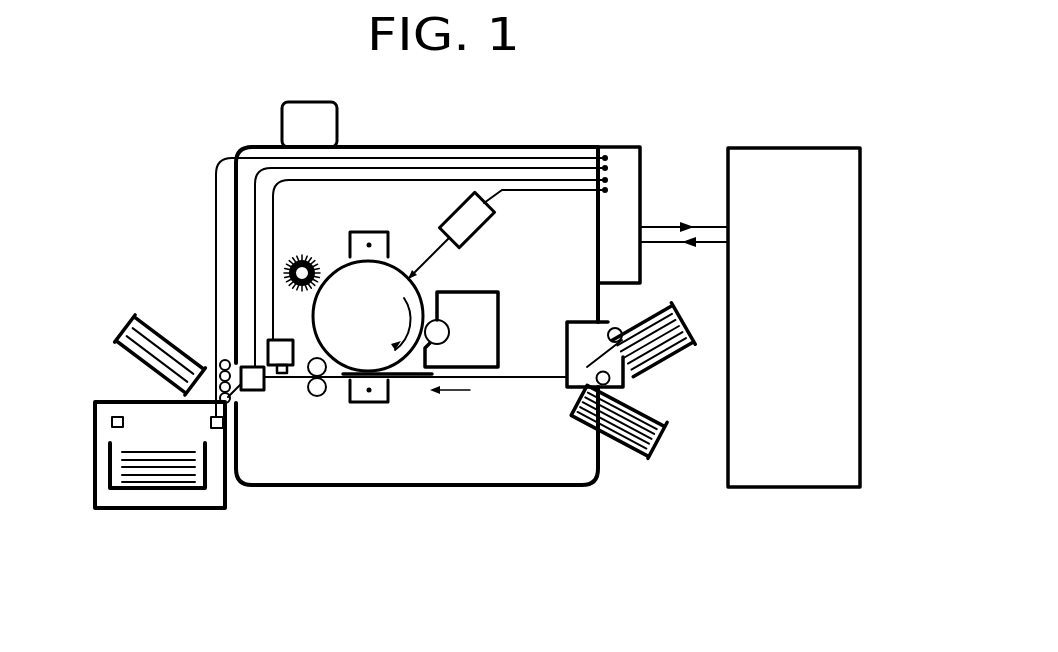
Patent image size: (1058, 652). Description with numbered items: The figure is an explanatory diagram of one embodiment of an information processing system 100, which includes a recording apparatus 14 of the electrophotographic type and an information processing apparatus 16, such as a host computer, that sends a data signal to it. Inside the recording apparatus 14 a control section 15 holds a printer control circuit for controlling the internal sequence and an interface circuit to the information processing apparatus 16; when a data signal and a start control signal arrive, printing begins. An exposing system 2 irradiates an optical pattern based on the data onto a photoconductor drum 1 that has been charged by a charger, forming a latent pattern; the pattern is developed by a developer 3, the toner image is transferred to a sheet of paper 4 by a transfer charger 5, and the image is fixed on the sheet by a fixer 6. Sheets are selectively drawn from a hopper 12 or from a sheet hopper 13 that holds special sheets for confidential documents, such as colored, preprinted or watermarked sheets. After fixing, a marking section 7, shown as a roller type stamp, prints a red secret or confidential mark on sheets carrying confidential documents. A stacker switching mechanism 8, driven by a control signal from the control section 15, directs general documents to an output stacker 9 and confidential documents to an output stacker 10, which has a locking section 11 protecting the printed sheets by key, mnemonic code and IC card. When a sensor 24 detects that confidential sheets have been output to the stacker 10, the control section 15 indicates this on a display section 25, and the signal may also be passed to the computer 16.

The information processing system 100 is at (160, 148).
The photoconductor drum 1 is at (414, 284).
The exposing system 2 is at (478, 227).
The developer 3 is at (498, 320).
The sheet of paper 4 is at (418, 380).
The transfer charger 5 is at (378, 402).
The fixer 6 is at (317, 396).
The marking section 7 is at (277, 340).
The stacker switching mechanism 8 is at (253, 390).
The output stacker 9 is at (143, 338).
The output stacker 10 is at (150, 477).
The locking section 11 is at (112, 422).
The hopper 12 is at (677, 353).
The sheet hopper 13 is at (660, 435).
The recording apparatus 14 is at (515, 146).
The control section 15 is at (633, 175).
The information processing apparatus 16 is at (817, 150).
The sensor 24 is at (223, 428).
The display section 25 is at (337, 123).